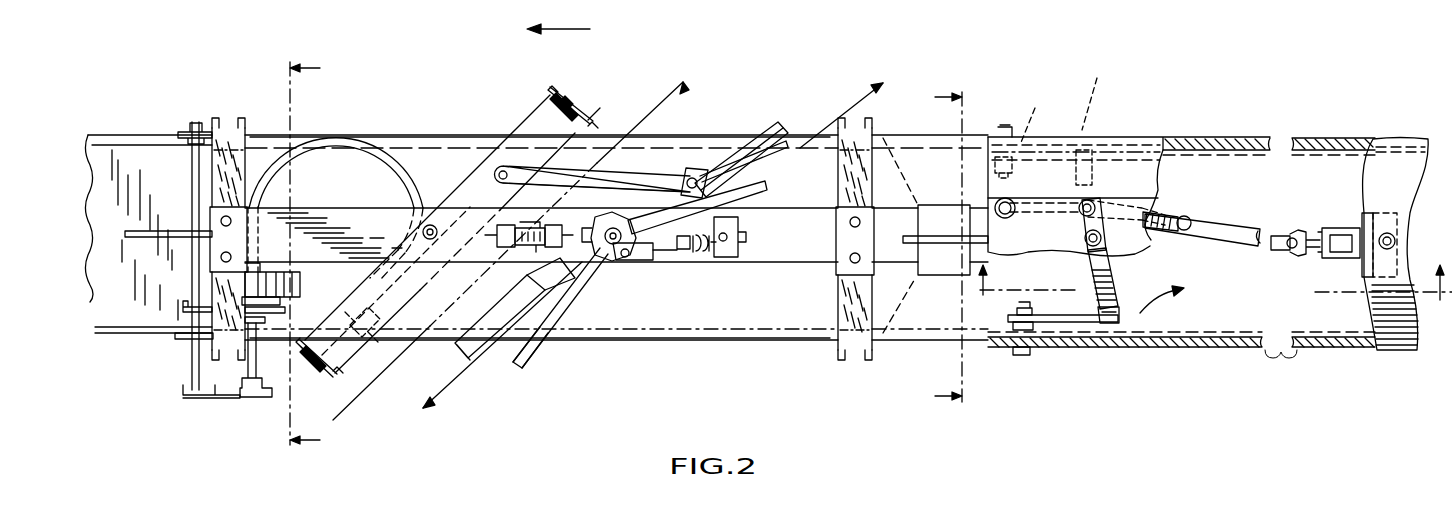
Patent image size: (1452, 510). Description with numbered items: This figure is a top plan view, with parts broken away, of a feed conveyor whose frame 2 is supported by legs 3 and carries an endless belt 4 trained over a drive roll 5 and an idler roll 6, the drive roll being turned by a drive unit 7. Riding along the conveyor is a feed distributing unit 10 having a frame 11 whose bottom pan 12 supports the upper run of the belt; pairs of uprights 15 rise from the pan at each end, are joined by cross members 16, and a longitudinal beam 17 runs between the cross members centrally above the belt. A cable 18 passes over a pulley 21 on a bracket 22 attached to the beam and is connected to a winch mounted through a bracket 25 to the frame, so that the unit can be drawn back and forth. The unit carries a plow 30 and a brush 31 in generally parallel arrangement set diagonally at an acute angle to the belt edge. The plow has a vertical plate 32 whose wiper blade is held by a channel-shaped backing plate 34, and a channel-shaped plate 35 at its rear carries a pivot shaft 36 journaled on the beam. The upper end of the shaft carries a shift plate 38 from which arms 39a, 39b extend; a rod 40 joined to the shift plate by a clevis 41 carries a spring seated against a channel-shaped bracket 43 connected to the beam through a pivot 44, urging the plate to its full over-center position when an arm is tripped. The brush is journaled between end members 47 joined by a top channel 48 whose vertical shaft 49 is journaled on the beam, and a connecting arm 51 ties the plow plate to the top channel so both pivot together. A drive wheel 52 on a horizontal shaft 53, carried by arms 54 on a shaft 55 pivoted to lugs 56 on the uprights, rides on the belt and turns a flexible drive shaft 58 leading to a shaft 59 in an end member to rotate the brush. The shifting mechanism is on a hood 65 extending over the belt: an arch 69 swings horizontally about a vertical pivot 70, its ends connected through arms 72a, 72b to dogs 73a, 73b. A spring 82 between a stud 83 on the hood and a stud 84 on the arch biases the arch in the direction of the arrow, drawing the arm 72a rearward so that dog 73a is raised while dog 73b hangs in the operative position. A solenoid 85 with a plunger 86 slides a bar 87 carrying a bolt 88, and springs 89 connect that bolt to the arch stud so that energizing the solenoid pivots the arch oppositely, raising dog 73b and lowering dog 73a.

The frame 2 is at (104, 131).
The legs 3 is at (310, 255).
The endless belt 4 is at (98, 190).
The drive roll 5 is at (430, 414).
The idler roll 6 is at (938, 248).
The drive unit 7 is at (1214, 296).
The feed distributing unit 10 is at (447, 132).
The frame 11 is at (395, 127).
The bottom pan 12 is at (626, 341).
The uprights 15 is at (218, 117).
The cross members 16 is at (223, 170).
The longitudinal beam 17 is at (301, 215).
The cable 18 is at (170, 228).
The pulley 21 is at (525, 225).
The bracket 22 is at (528, 253).
The bracket 25 is at (945, 208).
The plow 30 is at (753, 133).
The brush 31 is at (528, 116).
The vertical plate 32 is at (760, 158).
The backing plate 34 is at (467, 333).
The channel-shaped plate 35 is at (650, 198).
The pivot shaft 36 is at (595, 220).
The shift plate 38 is at (627, 258).
The arm 39a is at (527, 360).
The arm 39b is at (768, 190).
The rod 40 is at (680, 258).
The clevis 41 is at (650, 259).
The channel-shaped bracket 43 is at (738, 246).
The pivot 44 is at (727, 234).
The end members 47 is at (563, 96).
The top channel 48 is at (465, 184).
The vertical shaft 49 is at (422, 230).
The connecting arm 51 is at (640, 173).
The drive wheel 52 is at (297, 268).
The horizontal shaft 53 is at (259, 370).
The arms 54 is at (210, 398).
The shaft 55 is at (192, 382).
The lugs 56 is at (190, 129).
The flexible drive shaft 58 is at (290, 139).
The shaft 59 is at (317, 313).
The hood 65 is at (1143, 137).
The arch 69 is at (1110, 260).
The vertical pivot 70 is at (1085, 240).
The arm 72a is at (1093, 328).
The arm 72b is at (1080, 121).
The dog 73a is at (1050, 330).
The dog 73b is at (1019, 129).
The spring 82 is at (1057, 194).
The stud 83 is at (1022, 214).
The stud 84 is at (1092, 203).
The solenoid 85 is at (1350, 230).
The plunger 86 is at (1307, 248).
The bar 87 is at (1232, 226).
The bolt 88 is at (1183, 233).
The springs 89 is at (1171, 215).